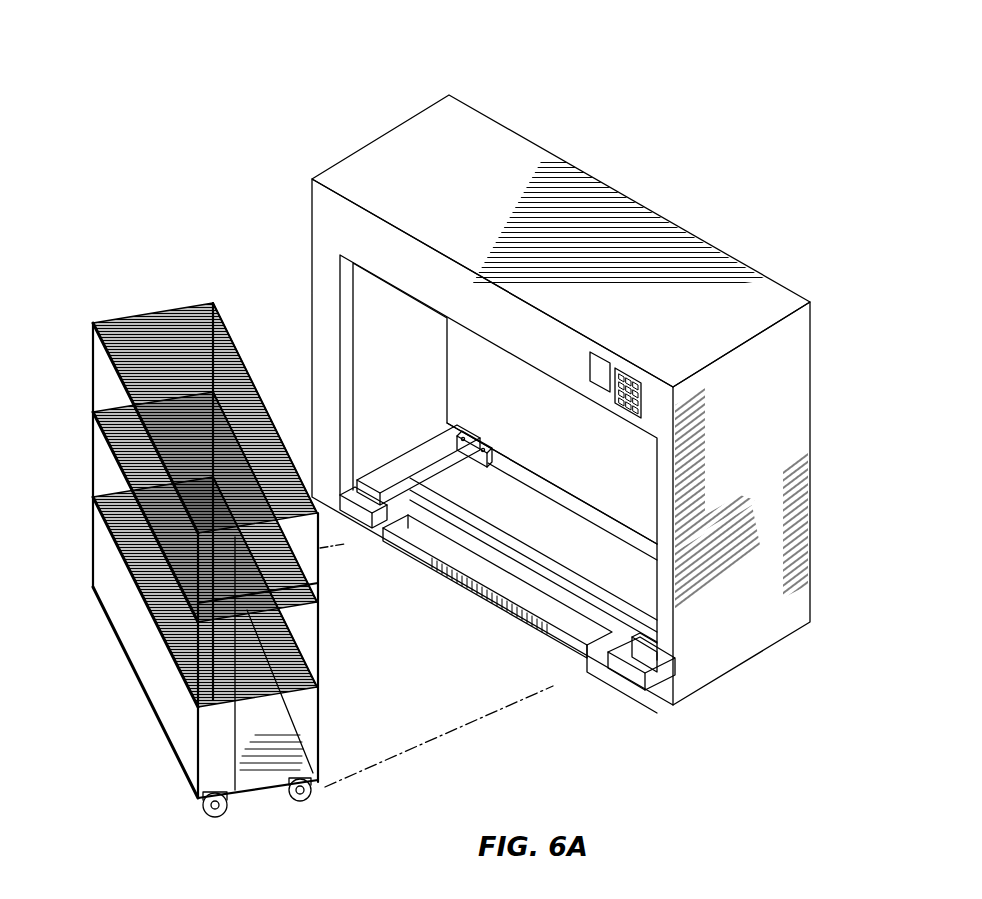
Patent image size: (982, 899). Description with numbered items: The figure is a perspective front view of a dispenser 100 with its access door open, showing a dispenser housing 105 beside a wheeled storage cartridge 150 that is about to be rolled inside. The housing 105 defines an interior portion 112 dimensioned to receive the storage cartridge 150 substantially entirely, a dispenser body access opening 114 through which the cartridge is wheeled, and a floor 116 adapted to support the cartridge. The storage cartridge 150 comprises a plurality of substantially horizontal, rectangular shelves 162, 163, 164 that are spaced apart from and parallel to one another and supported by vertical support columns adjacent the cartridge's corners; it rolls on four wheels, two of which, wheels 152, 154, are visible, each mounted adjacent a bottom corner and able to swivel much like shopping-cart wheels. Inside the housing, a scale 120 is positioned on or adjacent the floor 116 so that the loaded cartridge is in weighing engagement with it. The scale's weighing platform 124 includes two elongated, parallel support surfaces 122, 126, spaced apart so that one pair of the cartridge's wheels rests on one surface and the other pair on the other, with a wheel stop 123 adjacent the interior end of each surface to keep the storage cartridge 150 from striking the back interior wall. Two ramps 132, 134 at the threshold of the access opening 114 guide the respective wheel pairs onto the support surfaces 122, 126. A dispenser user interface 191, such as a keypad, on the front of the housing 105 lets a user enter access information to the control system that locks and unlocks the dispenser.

The dispenser 100 is at (592, 100).
The dispenser housing 105 is at (811, 392).
The interior portion 112 is at (630, 507).
The dispenser body access opening 114 is at (657, 550).
The floor 116 is at (533, 582).
The scale 120 is at (650, 660).
The support surface 122 is at (427, 477).
The wheel stop 123 is at (478, 450).
The weighing platform 124 is at (400, 486).
The support surface 126 is at (637, 617).
The first ramp 132 is at (370, 524).
The second ramp 134 is at (598, 654).
The dispenser user interface 191 is at (613, 370).
The storage cartridge 150 is at (201, 560).
The wheel 152 is at (228, 804).
The wheel 154 is at (294, 803).
The shelf 162 is at (132, 584).
The shelf 163 is at (103, 440).
The shelf 164 is at (107, 322).